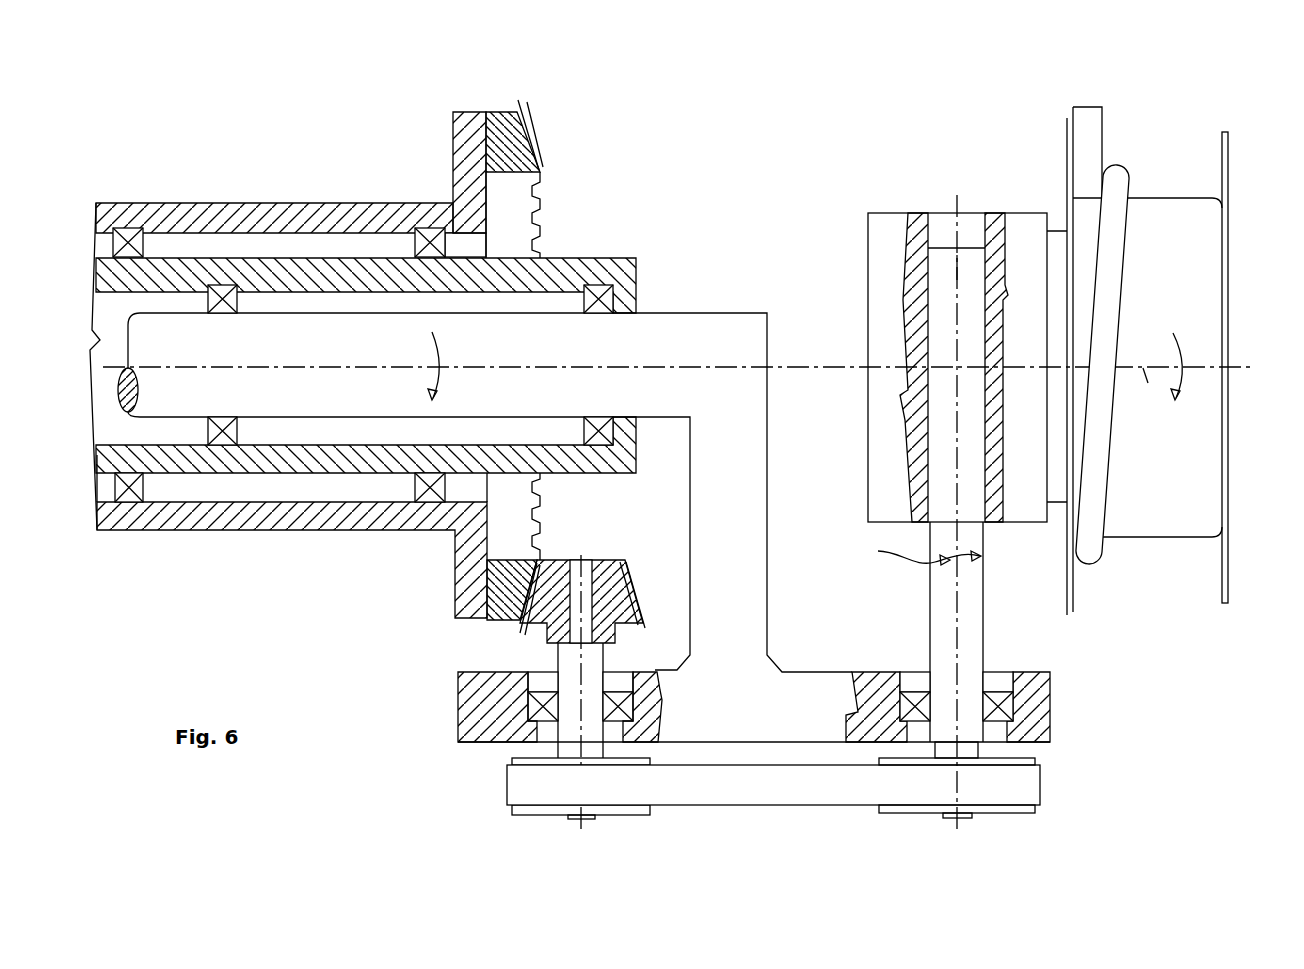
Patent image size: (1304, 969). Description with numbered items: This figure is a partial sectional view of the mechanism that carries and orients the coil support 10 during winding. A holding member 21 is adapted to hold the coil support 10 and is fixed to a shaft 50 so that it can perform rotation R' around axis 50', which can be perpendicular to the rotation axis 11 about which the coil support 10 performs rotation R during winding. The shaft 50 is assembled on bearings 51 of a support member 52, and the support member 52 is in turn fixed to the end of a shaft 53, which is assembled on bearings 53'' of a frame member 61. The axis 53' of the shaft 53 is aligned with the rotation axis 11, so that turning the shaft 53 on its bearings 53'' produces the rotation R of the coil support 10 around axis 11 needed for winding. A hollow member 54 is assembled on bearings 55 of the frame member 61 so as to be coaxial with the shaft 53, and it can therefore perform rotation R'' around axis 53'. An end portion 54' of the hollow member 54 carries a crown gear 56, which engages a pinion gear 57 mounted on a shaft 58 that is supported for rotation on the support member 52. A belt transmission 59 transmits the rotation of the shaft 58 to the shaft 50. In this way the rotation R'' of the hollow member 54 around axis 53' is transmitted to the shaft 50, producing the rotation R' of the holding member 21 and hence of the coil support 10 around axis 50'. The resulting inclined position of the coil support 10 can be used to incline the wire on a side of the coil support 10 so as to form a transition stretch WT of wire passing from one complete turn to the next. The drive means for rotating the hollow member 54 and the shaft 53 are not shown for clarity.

The coil support 10 is at (1183, 227).
The rotation axis 11 is at (1143, 368).
The holding member 21 is at (883, 245).
The shaft 50 is at (942, 512).
The axis 50' is at (938, 189).
The bearings 51 is at (995, 695).
The support member 52 is at (772, 697).
The shaft 53 is at (474, 438).
The axis 53' is at (117, 355).
The bearings 53'' is at (418, 281).
The hollow member 54 is at (288, 410).
The end portion 54' is at (434, 159).
The bearings 55 is at (125, 237).
The crown gear 56 is at (503, 125).
The pinion gear 57 is at (640, 578).
The shaft 58 is at (567, 657).
The belt transmission 59 is at (717, 790).
The frame member 61 is at (107, 455).
The rotation R is at (1225, 356).
The rotation R' is at (914, 550).
The rotation R'' is at (472, 364).
The transition stretch of wire WT is at (1088, 507).